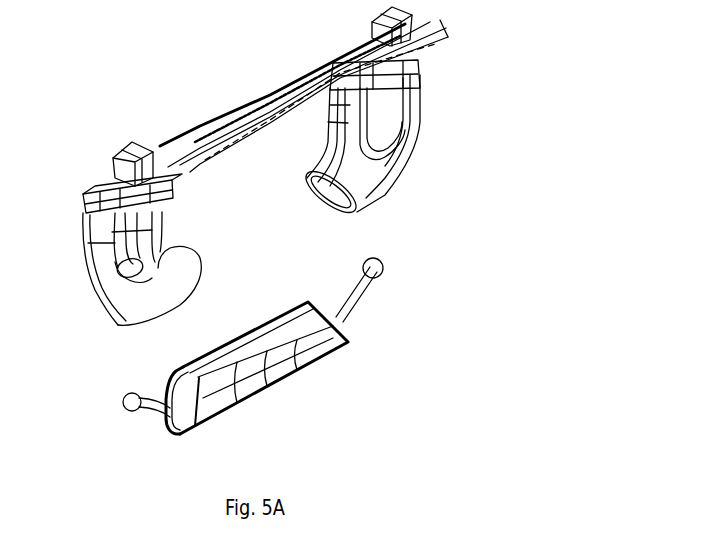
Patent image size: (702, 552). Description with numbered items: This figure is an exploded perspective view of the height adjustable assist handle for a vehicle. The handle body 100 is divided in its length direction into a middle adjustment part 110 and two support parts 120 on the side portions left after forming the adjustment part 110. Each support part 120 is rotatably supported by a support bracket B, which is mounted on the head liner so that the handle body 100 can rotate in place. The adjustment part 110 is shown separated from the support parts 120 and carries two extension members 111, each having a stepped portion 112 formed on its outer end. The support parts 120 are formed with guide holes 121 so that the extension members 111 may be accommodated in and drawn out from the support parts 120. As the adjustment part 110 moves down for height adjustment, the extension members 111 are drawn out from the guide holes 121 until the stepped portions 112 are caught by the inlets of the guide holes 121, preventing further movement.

The handle body 100 is at (481, 317).
The adjustment part 110 is at (280, 372).
The extension member 111 is at (153, 415).
The stepped portion 112 is at (123, 402).
The support part 120 is at (112, 297).
The guide hole 121 is at (170, 278).
The support bracket B is at (120, 228).